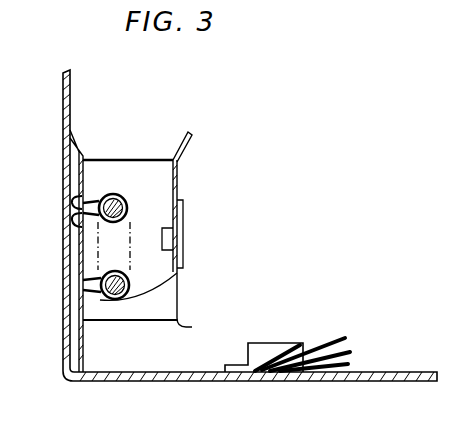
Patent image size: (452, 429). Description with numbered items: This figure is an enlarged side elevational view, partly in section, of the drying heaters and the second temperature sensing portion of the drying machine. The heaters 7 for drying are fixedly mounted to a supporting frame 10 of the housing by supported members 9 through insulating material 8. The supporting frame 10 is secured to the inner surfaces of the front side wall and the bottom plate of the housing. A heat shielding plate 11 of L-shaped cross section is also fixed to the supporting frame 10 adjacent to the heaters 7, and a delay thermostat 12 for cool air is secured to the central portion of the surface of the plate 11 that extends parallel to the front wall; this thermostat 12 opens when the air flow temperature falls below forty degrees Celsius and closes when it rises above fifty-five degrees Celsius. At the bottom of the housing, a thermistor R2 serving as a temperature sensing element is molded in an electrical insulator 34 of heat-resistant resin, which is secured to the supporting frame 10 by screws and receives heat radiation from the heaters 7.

The heaters 7 is at (118, 195).
The insulating material 8 is at (127, 204).
The supported members 9 is at (68, 215).
The supporting frame 10 is at (79, 351).
The heat shielding plate 11 is at (191, 139).
The delay thermostat 12 is at (183, 237).
The electrical insulator 34 is at (262, 362).
The thermistor R2 is at (310, 379).